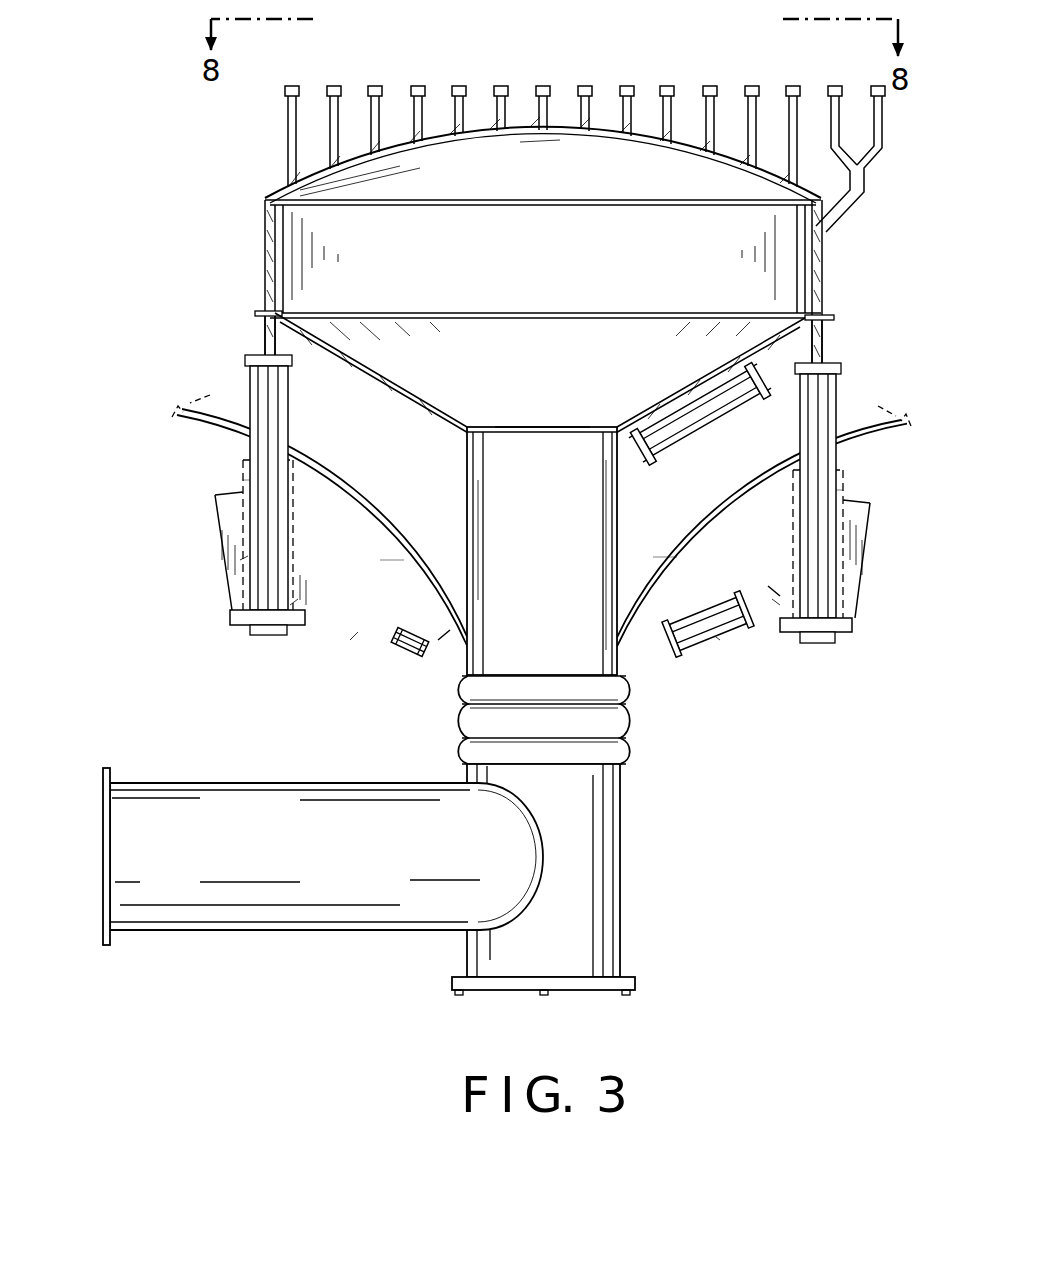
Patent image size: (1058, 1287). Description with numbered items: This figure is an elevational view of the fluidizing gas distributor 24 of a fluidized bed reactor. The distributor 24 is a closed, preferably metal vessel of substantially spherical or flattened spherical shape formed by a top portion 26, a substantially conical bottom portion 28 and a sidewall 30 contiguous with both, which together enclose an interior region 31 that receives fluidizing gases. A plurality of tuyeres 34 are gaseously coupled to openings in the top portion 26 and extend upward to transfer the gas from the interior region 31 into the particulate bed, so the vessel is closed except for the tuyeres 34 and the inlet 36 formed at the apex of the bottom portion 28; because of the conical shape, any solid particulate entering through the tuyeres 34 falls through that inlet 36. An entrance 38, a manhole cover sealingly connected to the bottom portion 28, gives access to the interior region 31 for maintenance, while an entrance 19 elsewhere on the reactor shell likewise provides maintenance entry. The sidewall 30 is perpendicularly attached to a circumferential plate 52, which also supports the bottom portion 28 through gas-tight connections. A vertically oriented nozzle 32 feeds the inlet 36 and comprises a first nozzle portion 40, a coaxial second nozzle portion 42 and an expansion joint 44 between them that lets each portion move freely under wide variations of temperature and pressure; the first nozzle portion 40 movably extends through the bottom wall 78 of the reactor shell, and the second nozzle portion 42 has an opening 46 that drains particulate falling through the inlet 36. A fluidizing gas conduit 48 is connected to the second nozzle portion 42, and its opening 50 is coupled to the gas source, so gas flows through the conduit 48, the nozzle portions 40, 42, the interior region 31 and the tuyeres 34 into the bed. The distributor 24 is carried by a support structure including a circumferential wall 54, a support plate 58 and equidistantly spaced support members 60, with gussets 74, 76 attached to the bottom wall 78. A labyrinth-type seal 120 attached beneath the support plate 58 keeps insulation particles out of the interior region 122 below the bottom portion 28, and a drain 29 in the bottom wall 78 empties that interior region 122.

The entrance 19 is at (712, 652).
The fluidizing gas distributor 24 is at (220, 222).
The top portion 26 is at (486, 150).
The bottom portion 28 is at (415, 395).
The drain 29 is at (400, 650).
The sidewall 30 is at (815, 268).
The interior region 31 is at (508, 268).
The nozzle 32 is at (490, 497).
The tuyeres 34 is at (540, 85).
The inlet 36 is at (558, 428).
The entrance 38 is at (692, 434).
The first nozzle portion 40 is at (605, 607).
The second nozzle portion 42 is at (600, 888).
The expansion joint 44 is at (626, 722).
The opening 46 is at (590, 993).
The fluidizing gas conduit 48 is at (328, 924).
The opening 50 is at (100, 800).
The circumferential plate 52 is at (265, 312).
The circumferential wall 54 is at (268, 338).
The support plate 58 is at (842, 369).
The support members 60 is at (300, 425).
The gusset 74 is at (312, 598).
The gusset 76 is at (232, 560).
The bottom wall 78 is at (445, 648).
The labyrinth-type seal 120 is at (268, 430).
The interior region 122 is at (372, 549).